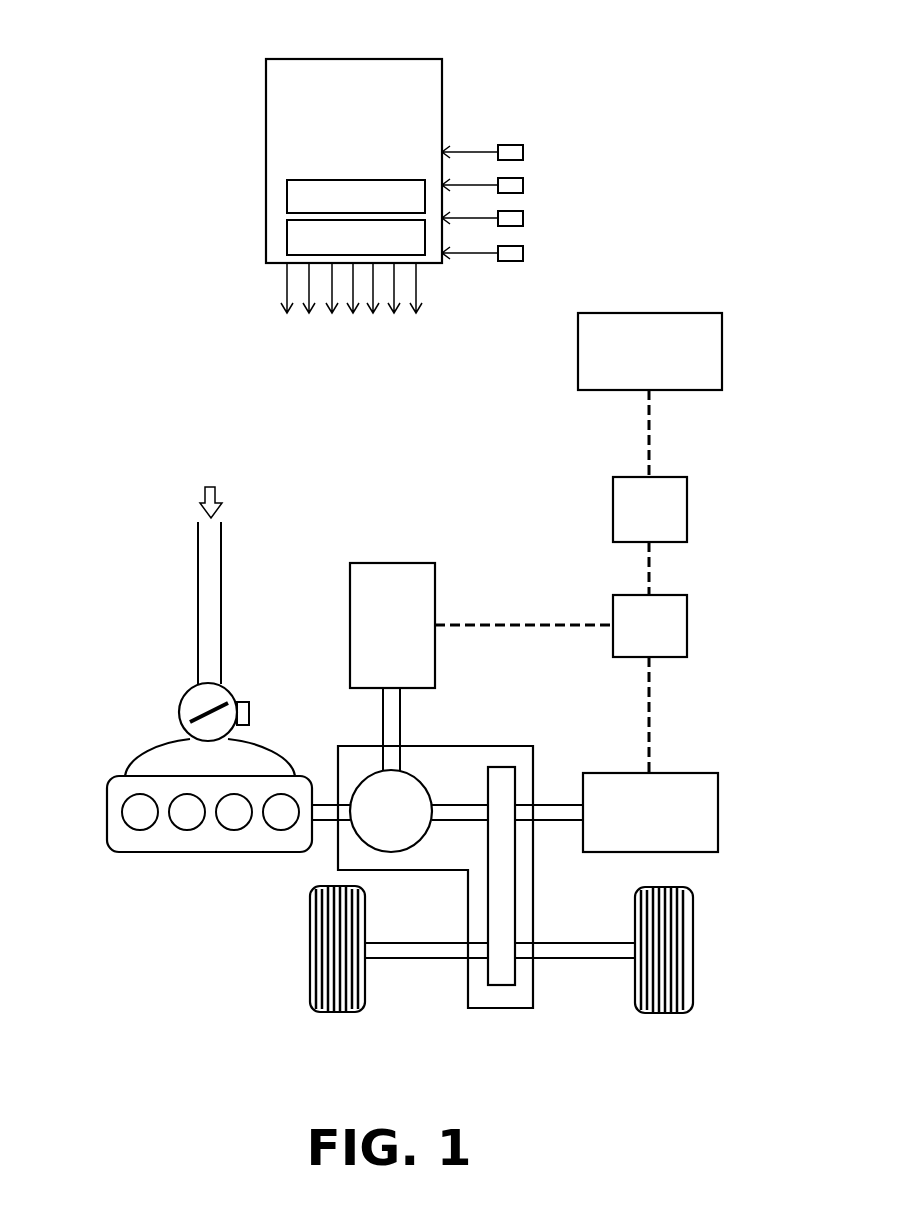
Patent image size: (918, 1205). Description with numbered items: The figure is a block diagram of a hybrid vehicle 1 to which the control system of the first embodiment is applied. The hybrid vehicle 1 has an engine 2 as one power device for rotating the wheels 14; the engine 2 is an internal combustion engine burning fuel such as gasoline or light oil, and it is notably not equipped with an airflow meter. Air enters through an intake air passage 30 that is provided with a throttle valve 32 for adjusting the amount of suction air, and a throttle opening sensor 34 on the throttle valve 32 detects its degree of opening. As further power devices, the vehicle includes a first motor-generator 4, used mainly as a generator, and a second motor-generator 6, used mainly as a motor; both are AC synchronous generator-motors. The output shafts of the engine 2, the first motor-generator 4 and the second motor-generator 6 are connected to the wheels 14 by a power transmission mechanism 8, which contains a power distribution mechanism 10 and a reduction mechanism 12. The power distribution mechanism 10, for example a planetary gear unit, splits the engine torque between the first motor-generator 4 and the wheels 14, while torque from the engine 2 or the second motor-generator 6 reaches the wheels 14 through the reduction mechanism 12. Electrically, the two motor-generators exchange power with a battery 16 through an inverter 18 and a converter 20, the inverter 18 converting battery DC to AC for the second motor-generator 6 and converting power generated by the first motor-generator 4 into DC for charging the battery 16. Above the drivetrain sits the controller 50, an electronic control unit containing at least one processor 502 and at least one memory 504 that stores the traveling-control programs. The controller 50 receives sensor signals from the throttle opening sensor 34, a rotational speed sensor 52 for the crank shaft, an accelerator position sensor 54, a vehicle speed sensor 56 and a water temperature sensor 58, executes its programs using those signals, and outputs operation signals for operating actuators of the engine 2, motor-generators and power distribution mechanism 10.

The hybrid vehicle 1 is at (150, 412).
The engine 2 is at (107, 800).
The first motor-generator 4 is at (398, 563).
The second motor-generator 6 is at (686, 773).
The power transmission mechanism 8 is at (520, 746).
The power distribution mechanism 10 is at (418, 775).
The reduction mechanism 12 is at (497, 767).
The wheels 14 is at (310, 928).
The battery 16 is at (668, 313).
The inverter 18 is at (672, 595).
The converter 20 is at (672, 477).
The intake air passage 30 is at (198, 540).
The throttle valve 32 is at (180, 710).
The throttle opening sensor 34 is at (252, 700).
The controller 50 is at (342, 59).
The rotational speed sensor 52 is at (523, 153).
The accelerator position sensor 54 is at (523, 186).
The vehicle speed sensor 56 is at (523, 219).
The water temperature sensor 58 is at (523, 254).
The processor 502 is at (288, 196).
The memory 504 is at (288, 238).